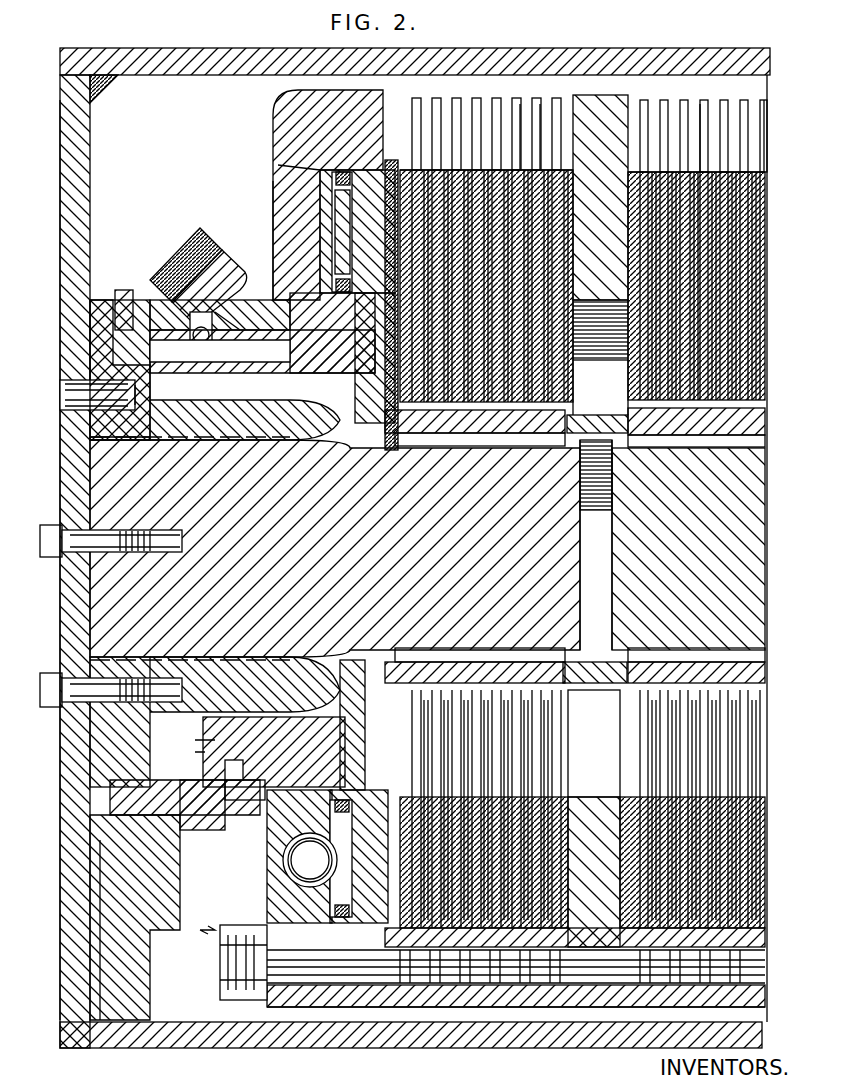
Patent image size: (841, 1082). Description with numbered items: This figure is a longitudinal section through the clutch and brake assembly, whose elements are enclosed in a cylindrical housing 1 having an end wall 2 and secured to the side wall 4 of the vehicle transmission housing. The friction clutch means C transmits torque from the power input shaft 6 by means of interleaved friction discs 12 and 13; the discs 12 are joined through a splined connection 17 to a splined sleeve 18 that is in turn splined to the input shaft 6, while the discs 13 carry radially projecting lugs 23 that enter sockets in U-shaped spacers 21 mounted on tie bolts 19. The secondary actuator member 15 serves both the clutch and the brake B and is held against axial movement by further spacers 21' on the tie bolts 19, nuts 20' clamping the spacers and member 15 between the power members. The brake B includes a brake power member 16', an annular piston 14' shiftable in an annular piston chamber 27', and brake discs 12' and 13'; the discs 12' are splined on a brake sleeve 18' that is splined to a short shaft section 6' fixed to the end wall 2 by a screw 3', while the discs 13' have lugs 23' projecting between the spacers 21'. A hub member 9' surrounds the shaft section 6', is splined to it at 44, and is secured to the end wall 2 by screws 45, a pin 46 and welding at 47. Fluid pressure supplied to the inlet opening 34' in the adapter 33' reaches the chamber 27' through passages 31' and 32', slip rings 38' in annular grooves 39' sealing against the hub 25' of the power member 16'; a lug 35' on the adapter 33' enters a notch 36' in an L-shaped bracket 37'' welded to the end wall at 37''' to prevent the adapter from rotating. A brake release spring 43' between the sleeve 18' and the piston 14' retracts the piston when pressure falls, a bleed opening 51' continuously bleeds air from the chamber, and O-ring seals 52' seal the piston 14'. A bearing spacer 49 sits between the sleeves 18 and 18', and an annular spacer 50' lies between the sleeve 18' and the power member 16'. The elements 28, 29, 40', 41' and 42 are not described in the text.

The housing 1 is at (695, 62).
The end wall 2 is at (80, 163).
The screw 3' is at (95, 543).
The side wall 4 is at (202, 842).
The power input shaft 6 is at (702, 549).
The short shaft section 6' is at (160, 543).
The hub member 9' is at (89, 427).
The friction discs 12 is at (598, 251).
The brake friction discs 12' is at (486, 124).
The friction discs 13 is at (712, 197).
The brake friction discs 13' is at (528, 124).
The annular piston 14' is at (369, 289).
The secondary actuator member 15 is at (600, 97).
The brake power member 16' is at (310, 195).
The splined connection 17 is at (730, 408).
The splined sleeve 18 is at (716, 548).
The brake sleeve 18' is at (597, 513).
The tie bolts 19 is at (600, 975).
The nuts 20' is at (216, 962).
The spacers 21 is at (532, 994).
The spacers 21' is at (550, 968).
The lugs 23 is at (692, 125).
The lugs 23' is at (563, 124).
The hub 25' is at (126, 303).
The annular piston chamber 27' is at (257, 234).
The lever block 28 is at (300, 350).
The slot 29 is at (265, 360).
The fluid passage 31' is at (246, 290).
The fluid passage 32' is at (219, 296).
The adapter 33' is at (209, 270).
The inlet opening 34' is at (186, 258).
The lug 35' is at (232, 828).
The notch 36' is at (192, 828).
The L-shaped bracket 37'' is at (135, 917).
The welding 37''' is at (125, 930).
The slip rings 38' is at (274, 742).
The annular grooves 39' is at (305, 725).
The shaft 40' is at (335, 548).
The piston 41' is at (347, 232).
The lower piston port 42 is at (309, 856).
The brake release spring 43' is at (362, 593).
The spline 44 is at (245, 556).
The screws 45 is at (40, 690).
The pin 46 is at (60, 395).
The welding 47 is at (95, 302).
The bearing spacer 49 is at (590, 670).
The annular spacer 50' is at (445, 546).
The bleed opening 51' is at (279, 157).
The O-ring seals 52' is at (354, 232).
The brake B is at (457, 93).
The friction clutch means C is at (773, 98).